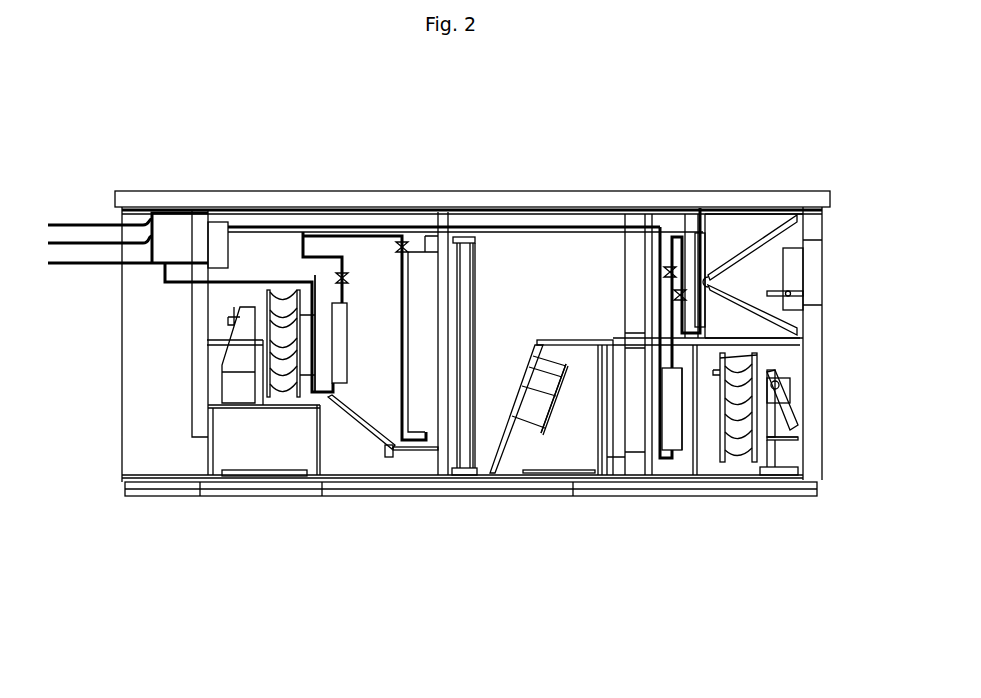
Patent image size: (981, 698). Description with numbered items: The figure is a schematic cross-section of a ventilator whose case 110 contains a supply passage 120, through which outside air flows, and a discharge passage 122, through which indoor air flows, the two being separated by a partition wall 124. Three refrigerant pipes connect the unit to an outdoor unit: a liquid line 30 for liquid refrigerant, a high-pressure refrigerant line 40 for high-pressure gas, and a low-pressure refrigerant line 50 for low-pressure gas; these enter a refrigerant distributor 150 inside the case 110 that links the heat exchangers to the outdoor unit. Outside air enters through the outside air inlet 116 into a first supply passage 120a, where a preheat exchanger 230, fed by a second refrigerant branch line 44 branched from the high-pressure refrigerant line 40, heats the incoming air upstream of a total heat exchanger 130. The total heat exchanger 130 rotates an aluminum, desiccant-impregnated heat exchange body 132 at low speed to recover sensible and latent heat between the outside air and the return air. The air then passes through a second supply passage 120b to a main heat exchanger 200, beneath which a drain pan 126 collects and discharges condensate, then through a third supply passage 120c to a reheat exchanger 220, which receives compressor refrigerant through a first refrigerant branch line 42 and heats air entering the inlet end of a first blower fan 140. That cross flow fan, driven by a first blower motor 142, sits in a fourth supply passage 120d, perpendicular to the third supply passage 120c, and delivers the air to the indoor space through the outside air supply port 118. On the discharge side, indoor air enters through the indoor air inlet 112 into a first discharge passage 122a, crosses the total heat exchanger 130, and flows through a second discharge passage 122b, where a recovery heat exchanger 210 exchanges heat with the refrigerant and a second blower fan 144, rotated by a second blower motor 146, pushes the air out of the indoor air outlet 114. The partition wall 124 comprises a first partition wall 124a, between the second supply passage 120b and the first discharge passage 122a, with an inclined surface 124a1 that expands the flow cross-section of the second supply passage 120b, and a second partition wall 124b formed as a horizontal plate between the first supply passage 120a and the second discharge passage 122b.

The case 110 is at (704, 206).
The indoor air inlet 112 is at (555, 484).
The indoor air outlet 114 is at (740, 362).
The outside air inlet 116 is at (810, 275).
The outside air supply port 118 is at (285, 486).
The supply passage 120 is at (596, 282).
The first supply passage 120a is at (756, 265).
The second supply passage 120b is at (544, 287).
The third supply passage 120c is at (372, 318).
The fourth supply passage 120d is at (231, 415).
The discharge passage 122 is at (592, 393).
The first discharge passage 122a is at (523, 438).
The second discharge passage 122b is at (675, 413).
The partition wall 124 is at (782, 345).
The first partition wall 124a is at (558, 346).
The inclined surface 124a1 is at (505, 430).
The second partition wall 124b is at (775, 441).
The drain pan 126 is at (418, 455).
The total heat exchanger 130 is at (637, 280).
The heat exchange body 132 is at (638, 413).
The first blower fan 140 is at (284, 362).
The first blower motor 142 is at (235, 320).
The second blower fan 144 is at (702, 452).
The second blower motor 146 is at (793, 388).
The refrigerant distributor 150 is at (220, 237).
The main heat exchanger 200 is at (428, 287).
The recovery heat exchanger 210 is at (668, 450).
The reheat exchanger 220 is at (331, 304).
The preheat exchanger 230 is at (704, 243).
The liquid line 30 is at (86, 253).
The high-pressure refrigerant line 40 is at (114, 276).
The first refrigerant branch line 42 is at (178, 279).
The second refrigerant branch line 44 is at (175, 206).
The low-pressure refrigerant line 50 is at (86, 233).